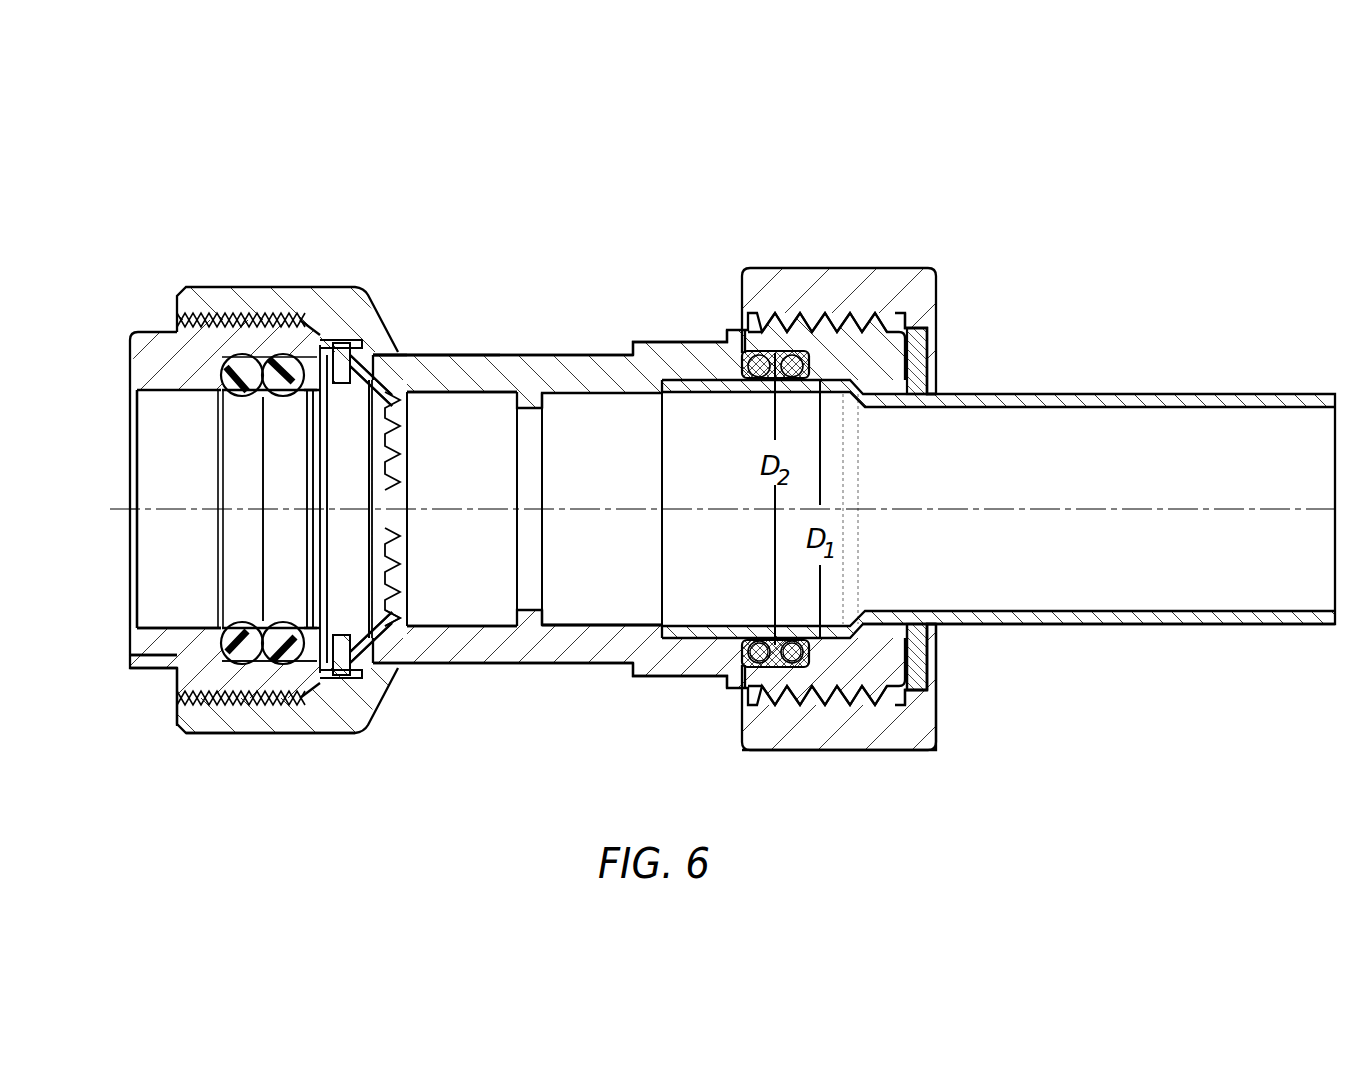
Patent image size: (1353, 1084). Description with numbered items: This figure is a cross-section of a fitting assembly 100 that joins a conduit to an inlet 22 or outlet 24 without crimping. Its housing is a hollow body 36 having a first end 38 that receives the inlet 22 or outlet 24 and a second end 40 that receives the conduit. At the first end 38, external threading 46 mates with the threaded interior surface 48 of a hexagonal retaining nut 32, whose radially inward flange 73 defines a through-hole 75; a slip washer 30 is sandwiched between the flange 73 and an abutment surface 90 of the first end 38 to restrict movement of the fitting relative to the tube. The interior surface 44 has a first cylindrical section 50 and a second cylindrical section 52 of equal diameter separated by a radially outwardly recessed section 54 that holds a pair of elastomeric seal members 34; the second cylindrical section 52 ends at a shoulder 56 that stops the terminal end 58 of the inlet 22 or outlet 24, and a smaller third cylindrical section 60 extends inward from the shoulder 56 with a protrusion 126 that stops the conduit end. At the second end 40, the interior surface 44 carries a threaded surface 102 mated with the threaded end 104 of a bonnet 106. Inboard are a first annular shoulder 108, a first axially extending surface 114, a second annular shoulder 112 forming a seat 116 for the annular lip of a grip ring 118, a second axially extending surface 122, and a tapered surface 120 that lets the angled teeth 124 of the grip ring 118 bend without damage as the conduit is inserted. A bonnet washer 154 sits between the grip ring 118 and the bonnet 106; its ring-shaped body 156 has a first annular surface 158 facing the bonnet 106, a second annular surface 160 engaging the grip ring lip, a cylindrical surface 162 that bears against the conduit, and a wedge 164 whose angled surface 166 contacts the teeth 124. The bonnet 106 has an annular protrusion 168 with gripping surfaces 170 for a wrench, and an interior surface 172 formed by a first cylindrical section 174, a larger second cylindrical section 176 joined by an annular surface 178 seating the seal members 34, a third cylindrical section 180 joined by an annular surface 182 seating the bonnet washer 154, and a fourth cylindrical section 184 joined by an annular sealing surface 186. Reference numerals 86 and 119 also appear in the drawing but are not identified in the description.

The fitting assembly 100 is at (215, 163).
The threaded surface 102 is at (275, 320).
The threaded end 104 is at (206, 324).
The bonnet 106 is at (132, 646).
The first annular shoulder 108 is at (358, 345).
The second annular shoulder 112 is at (372, 354).
The first axially extending surface 114 is at (364, 350).
The seat 116 is at (362, 672).
The grip ring 118 is at (392, 548).
The flange 119 is at (346, 690).
The tapered surface 120 is at (410, 394).
The second axially extending surface 122 is at (382, 366).
The teeth 124 is at (380, 474).
The protrusion 126 is at (335, 340).
The bonnet washer 154 is at (356, 680).
The ring-shaped body 156 is at (338, 392).
The first annular surface 158 is at (302, 672).
The second annular surface 160 is at (312, 380).
The cylindrical surface 162 is at (332, 640).
The wedge 164 is at (398, 612).
The angled surface 166 is at (386, 660).
The annular protrusion 168 is at (165, 640).
The gripping surfaces 170 is at (150, 657).
The interior surface 172 is at (165, 394).
The first cylindrical section 174 is at (180, 642).
The second cylindrical section 176 is at (278, 665).
The annular surface 178 is at (276, 642).
The third cylindrical section 180 is at (326, 690).
The annular surface 182 is at (325, 360).
The fourth cylindrical section 184 is at (352, 340).
The annular sealing surface 186 is at (340, 690).
The inlet 22 is at (998, 543).
The outlet 24 is at (1118, 620).
The slip washer 30 is at (932, 346).
The retaining nut 32 is at (872, 748).
The seal members 34 is at (245, 666).
The hollow body 36 is at (640, 348).
The first end 38 is at (742, 690).
The second end 40 is at (212, 718).
The interior surface 44 is at (462, 614).
The threading 46 is at (843, 312).
The threaded interior surface 48 is at (930, 330).
The first cylindrical section 50 is at (920, 376).
The second cylindrical section 52 is at (690, 382).
The recessed section 54 is at (787, 330).
The shoulder 56 is at (665, 638).
The terminal end 58 is at (682, 380).
The third cylindrical section 60 is at (500, 355).
The flange 73 is at (933, 657).
The through-hole 75 is at (940, 627).
The pipe surface 86 is at (918, 627).
The abutment surface 90 is at (931, 660).